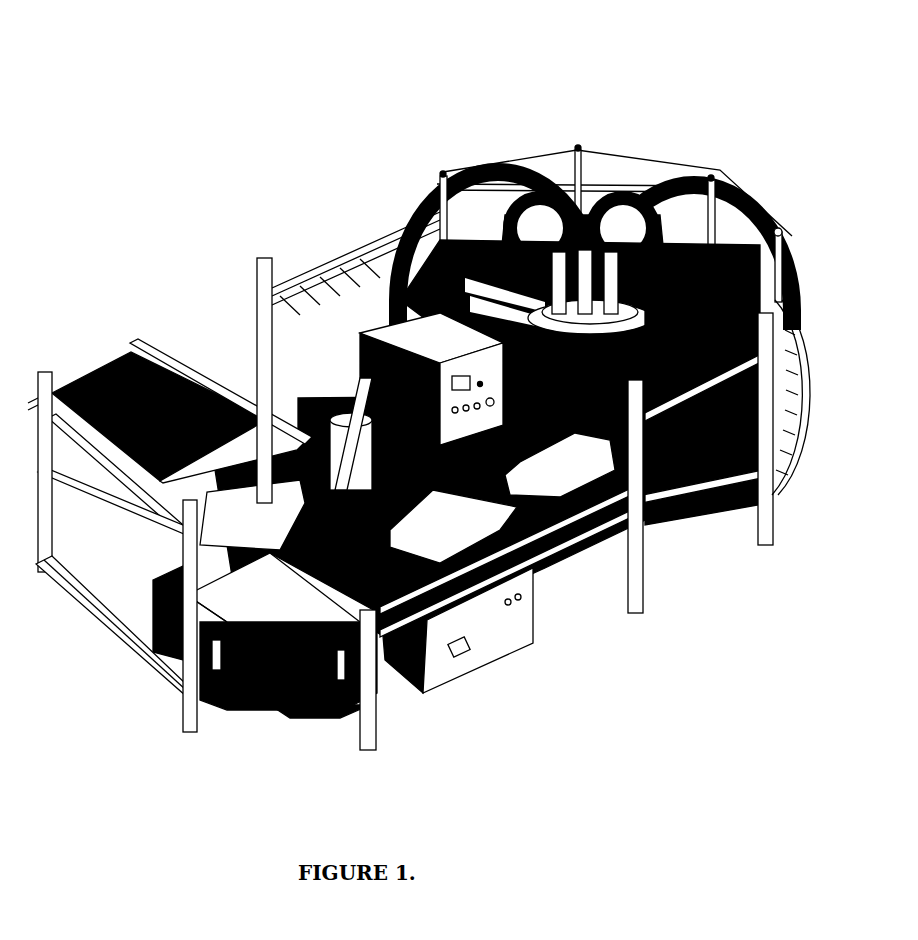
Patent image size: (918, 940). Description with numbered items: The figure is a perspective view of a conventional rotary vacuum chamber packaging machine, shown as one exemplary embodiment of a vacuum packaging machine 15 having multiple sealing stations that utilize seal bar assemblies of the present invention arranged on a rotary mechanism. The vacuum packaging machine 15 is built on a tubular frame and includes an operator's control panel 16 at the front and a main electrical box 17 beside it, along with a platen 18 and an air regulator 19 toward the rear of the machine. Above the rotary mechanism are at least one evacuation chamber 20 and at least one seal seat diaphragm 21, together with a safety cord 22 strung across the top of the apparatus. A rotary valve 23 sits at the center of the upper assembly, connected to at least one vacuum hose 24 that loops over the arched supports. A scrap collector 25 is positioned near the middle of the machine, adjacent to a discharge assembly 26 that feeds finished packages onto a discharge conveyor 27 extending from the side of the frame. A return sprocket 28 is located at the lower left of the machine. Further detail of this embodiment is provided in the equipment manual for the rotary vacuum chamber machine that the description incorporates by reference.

The vacuum packaging machine 15 is at (84, 85).
The operator's control panel 16 is at (167, 675).
The main electrical box 17 is at (493, 655).
The platen 18 is at (553, 597).
The air regulator 19 is at (667, 527).
The evacuation chamber 20 is at (757, 453).
The seal seat diaphragm 21 is at (773, 257).
The safety cord 22 is at (560, 152).
The rotary valve 23 is at (493, 168).
The vacuum hose 24 is at (423, 207).
The scrap collector 25 is at (367, 320).
The discharge assembly 26 is at (340, 415).
The discharge conveyor 27 is at (100, 365).
The return sprocket 28 is at (157, 598).